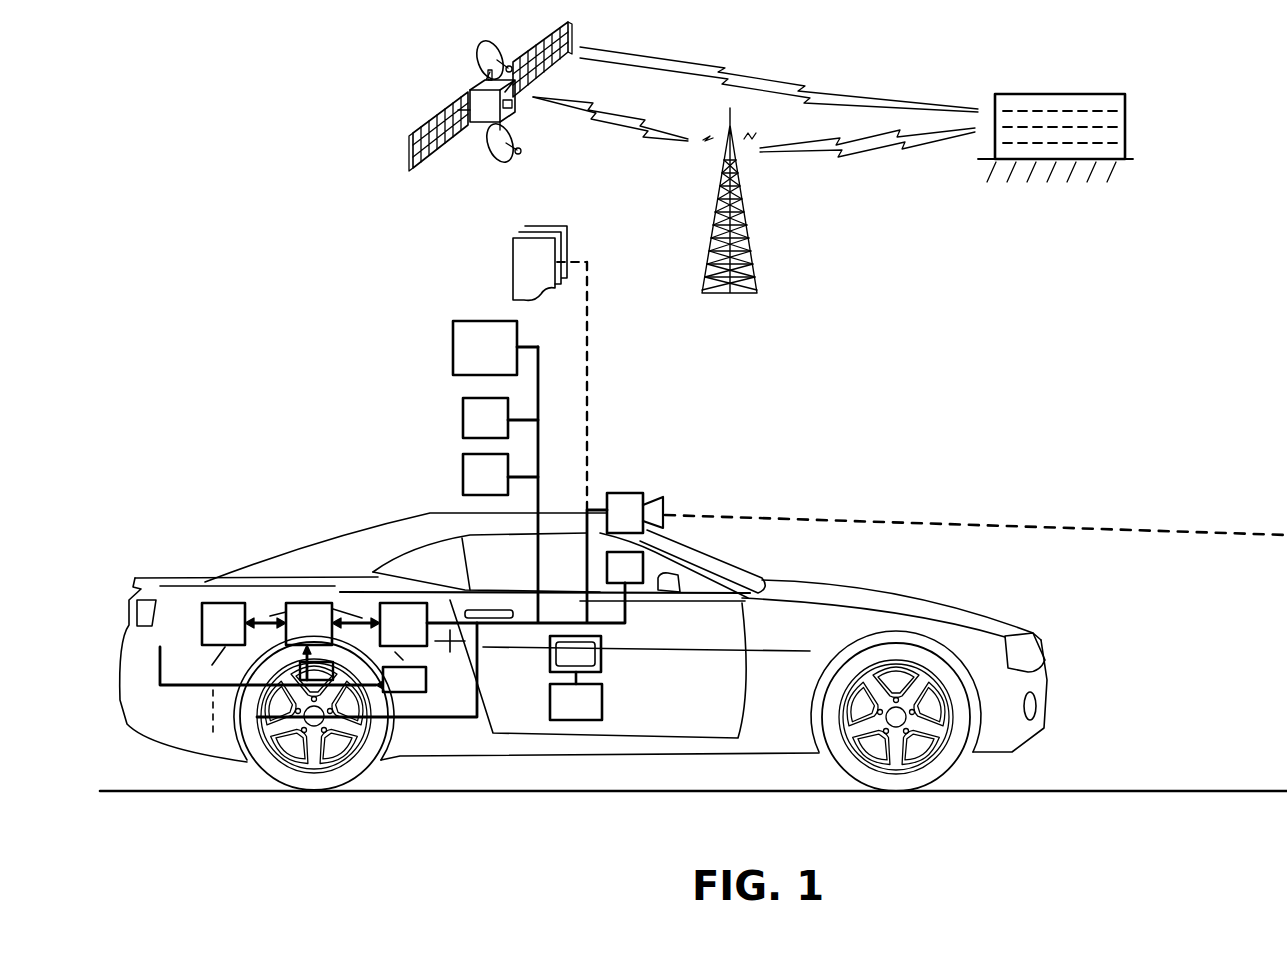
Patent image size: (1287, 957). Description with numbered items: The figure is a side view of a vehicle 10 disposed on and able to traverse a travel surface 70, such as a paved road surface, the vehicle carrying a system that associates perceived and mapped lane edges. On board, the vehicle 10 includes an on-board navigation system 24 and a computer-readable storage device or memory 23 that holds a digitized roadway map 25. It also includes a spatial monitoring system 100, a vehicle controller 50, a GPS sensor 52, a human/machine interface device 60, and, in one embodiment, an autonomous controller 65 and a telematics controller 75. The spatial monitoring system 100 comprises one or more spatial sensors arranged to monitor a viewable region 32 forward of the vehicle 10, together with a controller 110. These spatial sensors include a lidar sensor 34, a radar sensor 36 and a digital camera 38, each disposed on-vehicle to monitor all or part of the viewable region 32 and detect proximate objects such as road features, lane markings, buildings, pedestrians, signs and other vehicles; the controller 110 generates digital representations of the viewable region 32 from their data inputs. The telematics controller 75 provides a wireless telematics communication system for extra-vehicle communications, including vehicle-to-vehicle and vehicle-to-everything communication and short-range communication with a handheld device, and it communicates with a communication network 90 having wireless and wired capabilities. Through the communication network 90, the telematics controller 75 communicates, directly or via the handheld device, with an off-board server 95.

The vehicle 10 is at (938, 582).
The computer-readable storage device or media (memory) 23 is at (513, 262).
The on-board navigation system 24 is at (660, 573).
The digitized roadway map 25 is at (706, 555).
The viewable region 32 is at (790, 513).
The lidar sensor 34 is at (498, 361).
The radar sensor 36 is at (499, 431).
The digital camera 38 is at (499, 487).
The vehicle controller 50 is at (303, 603).
The global positioning system (GPS) sensor 52 is at (602, 700).
The human/machine interface (HMI) device 60 is at (601, 655).
The autonomous controller 65 is at (405, 693).
The travel surface 70 is at (1112, 789).
The telematics controller 75 is at (222, 603).
The communication network 90 is at (603, 182).
The off-board server 95 is at (1128, 118).
The spatial monitoring system 100 is at (645, 494).
The controller 110 is at (402, 603).